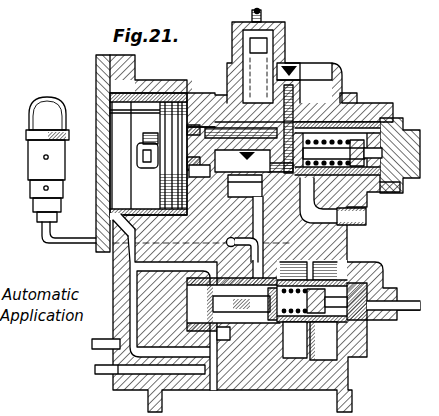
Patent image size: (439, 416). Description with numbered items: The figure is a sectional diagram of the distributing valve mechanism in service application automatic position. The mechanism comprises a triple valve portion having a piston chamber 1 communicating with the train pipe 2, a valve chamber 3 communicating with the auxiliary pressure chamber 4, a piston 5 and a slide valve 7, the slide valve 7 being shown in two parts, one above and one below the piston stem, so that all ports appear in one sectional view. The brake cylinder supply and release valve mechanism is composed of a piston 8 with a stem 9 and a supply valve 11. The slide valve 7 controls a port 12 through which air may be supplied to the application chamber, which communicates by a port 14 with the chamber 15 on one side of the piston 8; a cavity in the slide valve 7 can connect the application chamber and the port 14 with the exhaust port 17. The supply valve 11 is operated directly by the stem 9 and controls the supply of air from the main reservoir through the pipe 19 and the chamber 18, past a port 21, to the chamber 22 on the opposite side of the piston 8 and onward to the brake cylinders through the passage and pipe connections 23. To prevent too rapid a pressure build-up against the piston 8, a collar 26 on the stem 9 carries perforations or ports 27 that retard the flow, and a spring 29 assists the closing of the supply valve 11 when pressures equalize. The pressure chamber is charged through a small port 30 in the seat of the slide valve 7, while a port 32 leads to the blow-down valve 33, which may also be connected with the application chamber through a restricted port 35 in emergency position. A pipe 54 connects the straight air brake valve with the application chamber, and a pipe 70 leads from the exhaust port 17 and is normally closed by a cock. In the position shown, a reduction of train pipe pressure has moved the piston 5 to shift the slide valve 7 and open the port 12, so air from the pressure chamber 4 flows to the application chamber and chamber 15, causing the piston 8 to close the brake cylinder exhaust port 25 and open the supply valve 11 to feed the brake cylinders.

The piston chamber 1 is at (347, 349).
The train pipe 2 is at (410, 312).
The valve chamber 3 is at (175, 315).
The auxiliary pressure chamber 4 is at (206, 196).
The piston 5 is at (305, 384).
The slide valve 7 is at (280, 329).
The piston 8 is at (171, 95).
The stem 9 is at (352, 97).
The supply valve 11 is at (304, 98).
The port 12 is at (216, 385).
The port 14 is at (130, 275).
The chamber 15 is at (123, 166).
The exhaust port 17 is at (235, 372).
The chamber 18 is at (325, 68).
The pipe 19 is at (252, 17).
The port 21 is at (264, 103).
The chamber 22 is at (373, 118).
The pipe connections 23 is at (352, 226).
The brake cylinder exhaust port 25 is at (245, 207).
The flange or collar 26 is at (217, 172).
The perforations or ports 27 is at (205, 98).
The spring 29 is at (350, 202).
The port 30 is at (262, 338).
The port 32 is at (258, 257).
The blow-down valve 33 is at (37, 189).
The restricted port 35 is at (213, 298).
The pipe 54 is at (92, 345).
The pipe 70 is at (100, 375).